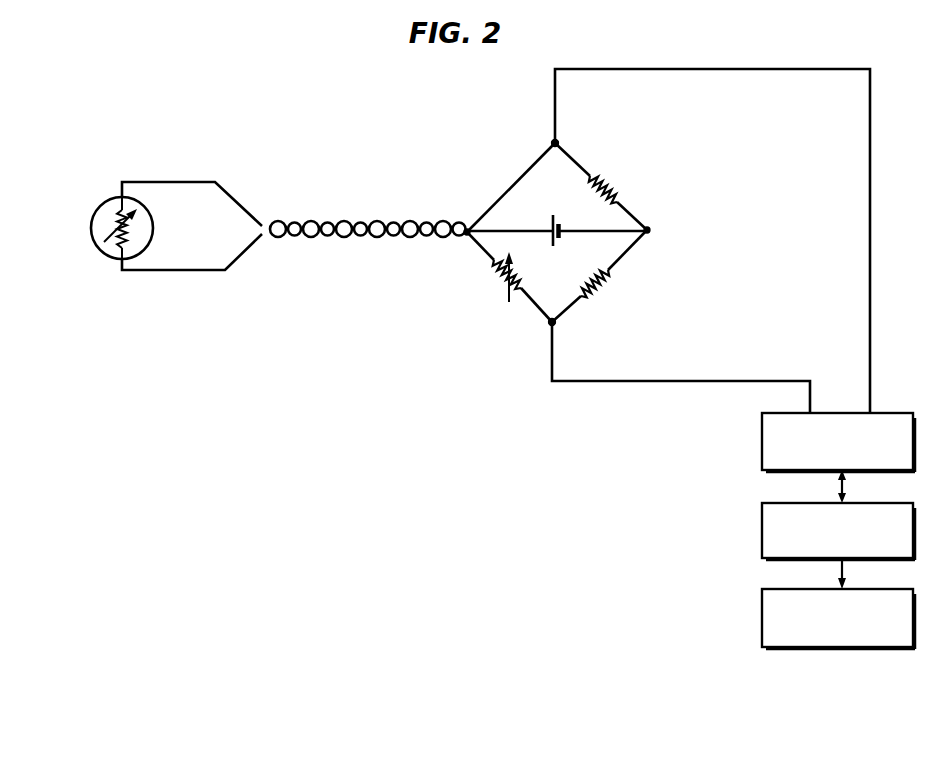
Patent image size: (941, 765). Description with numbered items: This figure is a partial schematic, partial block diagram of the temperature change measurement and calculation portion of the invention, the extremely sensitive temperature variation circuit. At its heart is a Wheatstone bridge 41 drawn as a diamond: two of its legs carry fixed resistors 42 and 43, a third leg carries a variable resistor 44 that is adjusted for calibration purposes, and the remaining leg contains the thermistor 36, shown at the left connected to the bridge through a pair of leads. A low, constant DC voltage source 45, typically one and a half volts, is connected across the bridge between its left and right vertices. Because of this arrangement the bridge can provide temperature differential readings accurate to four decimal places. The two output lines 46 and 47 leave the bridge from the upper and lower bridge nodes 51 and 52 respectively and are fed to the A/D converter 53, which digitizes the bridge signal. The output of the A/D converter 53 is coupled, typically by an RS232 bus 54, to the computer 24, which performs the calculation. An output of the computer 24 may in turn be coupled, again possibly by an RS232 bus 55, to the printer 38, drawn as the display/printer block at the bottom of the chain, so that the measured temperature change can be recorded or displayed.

The computer 24 is at (879, 503).
The thermistor 36 is at (98, 205).
The printer 38 is at (878, 591).
The Wheatstone bridge 41 is at (495, 184).
The fixed resistor 42 is at (607, 181).
The fixed resistor 43 is at (599, 280).
The variable resistor 44 is at (500, 288).
The DC voltage source 45 is at (554, 218).
The output line 46 is at (749, 68).
The output line 47 is at (694, 380).
The bridge node 51 is at (560, 142).
The bridge node 52 is at (557, 322).
The A/D converter 53 is at (895, 412).
The RS232 bus 54 is at (838, 485).
The RS232 bus 55 is at (838, 573).